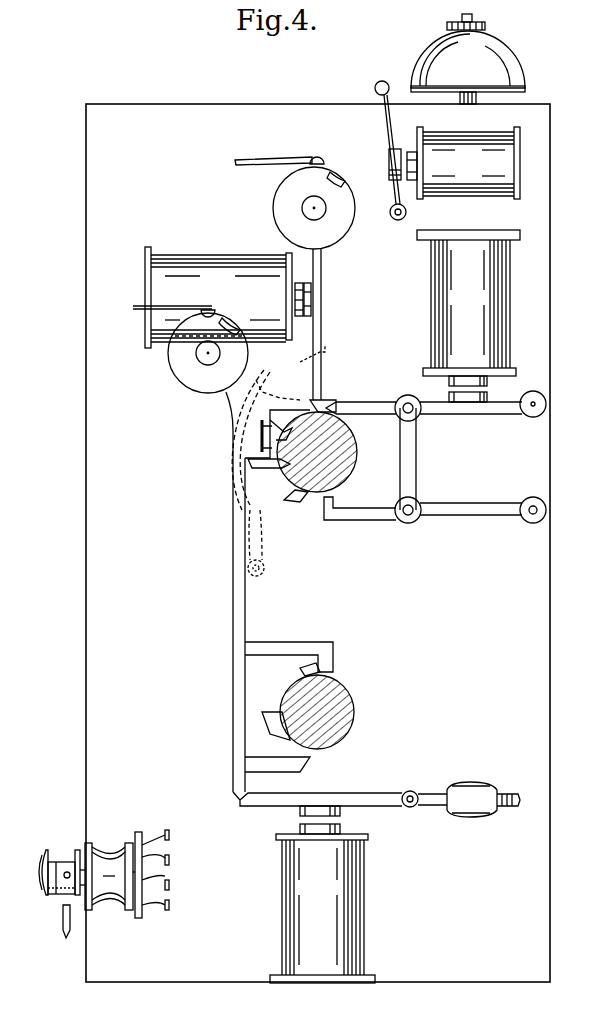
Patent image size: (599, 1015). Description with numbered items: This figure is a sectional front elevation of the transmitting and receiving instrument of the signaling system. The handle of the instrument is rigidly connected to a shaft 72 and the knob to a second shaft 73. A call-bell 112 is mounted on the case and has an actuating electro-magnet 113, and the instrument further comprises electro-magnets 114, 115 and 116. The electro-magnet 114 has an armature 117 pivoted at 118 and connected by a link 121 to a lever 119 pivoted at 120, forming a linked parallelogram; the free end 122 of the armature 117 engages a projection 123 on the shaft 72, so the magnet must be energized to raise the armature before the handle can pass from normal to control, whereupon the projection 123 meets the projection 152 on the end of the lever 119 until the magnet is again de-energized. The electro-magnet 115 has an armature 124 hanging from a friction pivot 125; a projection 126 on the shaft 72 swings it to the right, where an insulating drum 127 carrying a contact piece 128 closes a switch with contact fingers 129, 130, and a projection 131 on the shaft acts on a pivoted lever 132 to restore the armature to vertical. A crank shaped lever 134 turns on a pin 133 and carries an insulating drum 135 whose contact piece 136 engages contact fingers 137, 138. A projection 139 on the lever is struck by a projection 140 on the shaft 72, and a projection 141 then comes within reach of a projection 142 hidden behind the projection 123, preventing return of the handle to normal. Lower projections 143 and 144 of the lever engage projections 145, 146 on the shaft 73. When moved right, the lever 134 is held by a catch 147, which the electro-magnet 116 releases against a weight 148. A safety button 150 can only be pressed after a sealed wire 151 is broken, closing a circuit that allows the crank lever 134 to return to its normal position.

The shaft 72 is at (317, 452).
The shaft 73 is at (317, 712).
The call-bell 112 is at (468, 59).
The actuating electro-magnet 113 is at (468, 163).
The electro-magnet 114 is at (468, 316).
The electro-magnet 115 is at (218, 297).
The electro-magnet 116 is at (322, 894).
The armature 117 is at (468, 414).
The pivot 118 is at (533, 406).
The lever 119 is at (466, 503).
The pivot 120 is at (531, 513).
The link 121 is at (406, 462).
The free end of armature 122 is at (345, 402).
The projection 123 is at (326, 400).
The armature 124 is at (322, 316).
The pivot 125 is at (302, 209).
The projection 126 is at (258, 468).
The insulating drum 127 is at (347, 232).
The contact piece 128 is at (345, 180).
The contact finger 129 is at (281, 150).
The contact finger 130 is at (317, 160).
The projection 131 is at (295, 430).
The pivoted lever 132 is at (257, 429).
The pin 133 is at (197, 359).
The crank shaped lever 134 is at (232, 440).
The insulating drum 135 is at (198, 392).
The contact piece 136 is at (240, 327).
The contact finger 137 is at (176, 296).
The contact finger 138 is at (208, 313).
The projection 139 is at (280, 396).
The projection 140 is at (290, 500).
The projection 141 is at (261, 436).
The projection 142 is at (304, 357).
The projection 143 is at (318, 642).
The projection 144 is at (280, 772).
The projection 145 is at (274, 730).
The projection 146 is at (302, 668).
The catch 147 is at (236, 800).
The weight 148 is at (466, 817).
The safety button 150 is at (36, 850).
The sealed wire 151 is at (66, 890).
The projection 152 is at (330, 520).